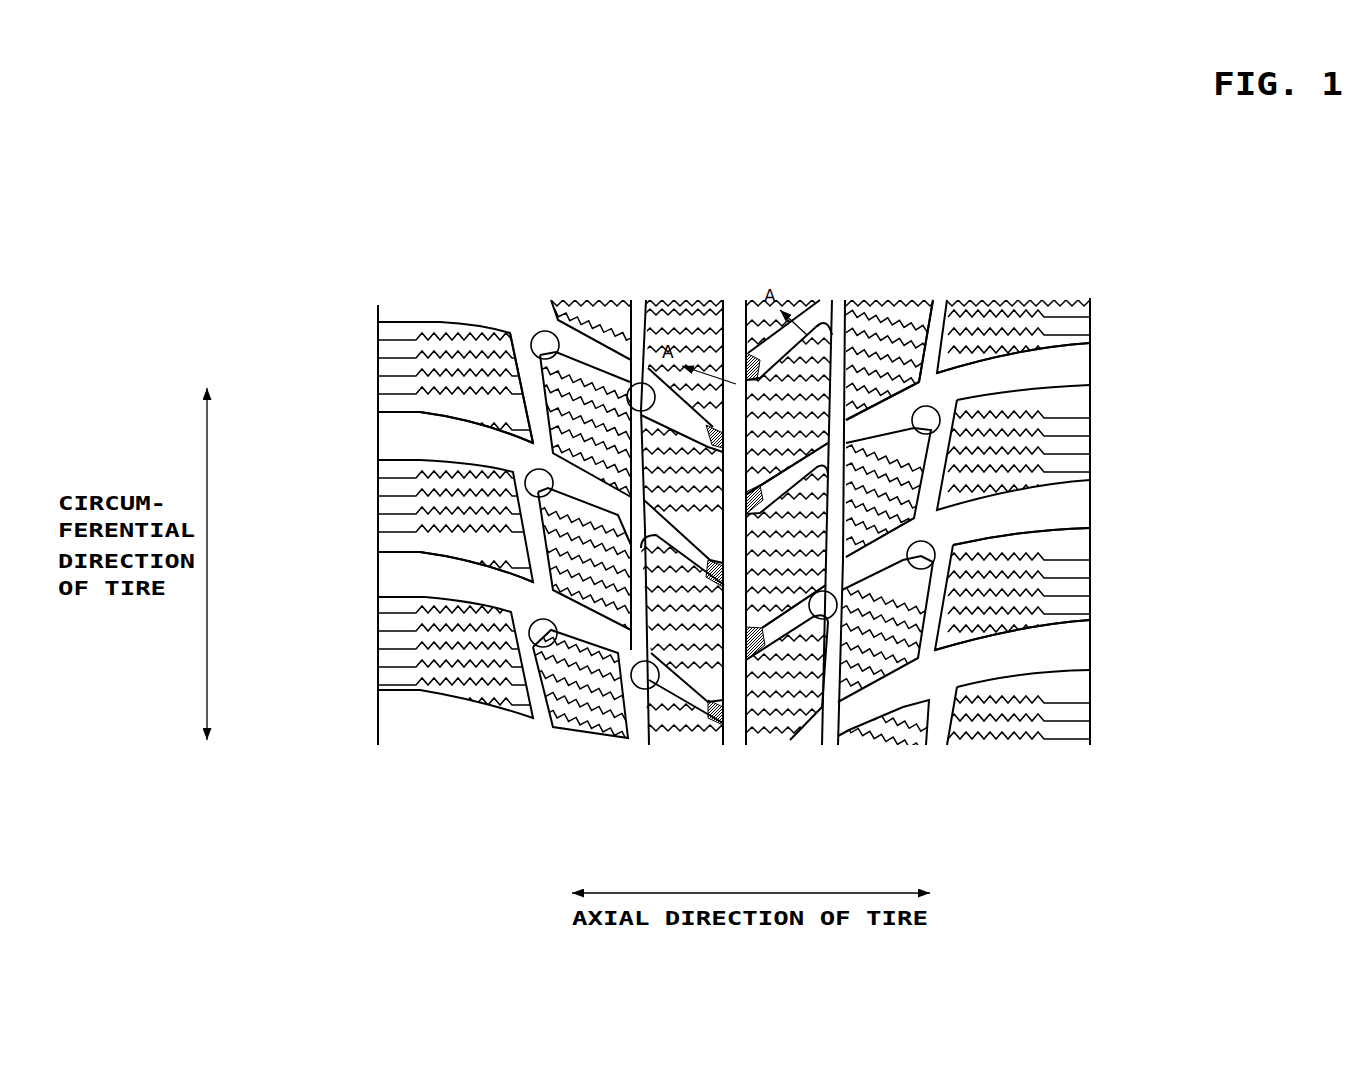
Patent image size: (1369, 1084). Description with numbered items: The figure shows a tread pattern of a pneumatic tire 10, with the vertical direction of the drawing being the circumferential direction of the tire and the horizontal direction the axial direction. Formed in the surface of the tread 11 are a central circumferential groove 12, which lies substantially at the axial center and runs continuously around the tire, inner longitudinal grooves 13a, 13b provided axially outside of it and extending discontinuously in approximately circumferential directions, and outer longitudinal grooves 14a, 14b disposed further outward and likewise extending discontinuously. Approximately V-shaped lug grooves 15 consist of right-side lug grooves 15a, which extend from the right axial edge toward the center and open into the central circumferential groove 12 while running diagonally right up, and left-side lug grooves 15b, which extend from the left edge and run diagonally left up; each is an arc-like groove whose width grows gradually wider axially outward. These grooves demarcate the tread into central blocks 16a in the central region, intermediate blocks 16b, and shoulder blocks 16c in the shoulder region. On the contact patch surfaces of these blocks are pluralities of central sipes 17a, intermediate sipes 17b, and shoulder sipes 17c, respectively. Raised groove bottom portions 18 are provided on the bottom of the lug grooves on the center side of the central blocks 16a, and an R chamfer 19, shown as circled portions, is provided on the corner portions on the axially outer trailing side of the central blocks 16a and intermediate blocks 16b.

The pneumatic tire 10 is at (1100, 327).
The tread 11 is at (1090, 430).
The central circumferential groove 12 is at (735, 705).
The inner longitudinal groove 13a is at (839, 370).
The inner longitudinal groove 13b is at (634, 308).
The outer longitudinal groove 14a is at (944, 303).
The outer longitudinal groove 14b is at (521, 350).
The lug grooves 15 is at (415, 440).
The right-side lug groove 15a is at (1043, 648).
The left-side lug groove 15b is at (405, 566).
The central block 16a is at (1082, 369).
The intermediate block 16b is at (888, 563).
The shoulder block 16c is at (1070, 590).
The central sipe 17a is at (800, 692).
The intermediate sipe 17b is at (903, 645).
The shoulder sipe 17c is at (1062, 692).
The raised groove bottom portion 18 is at (748, 353).
The chamfer 19 is at (544, 332).